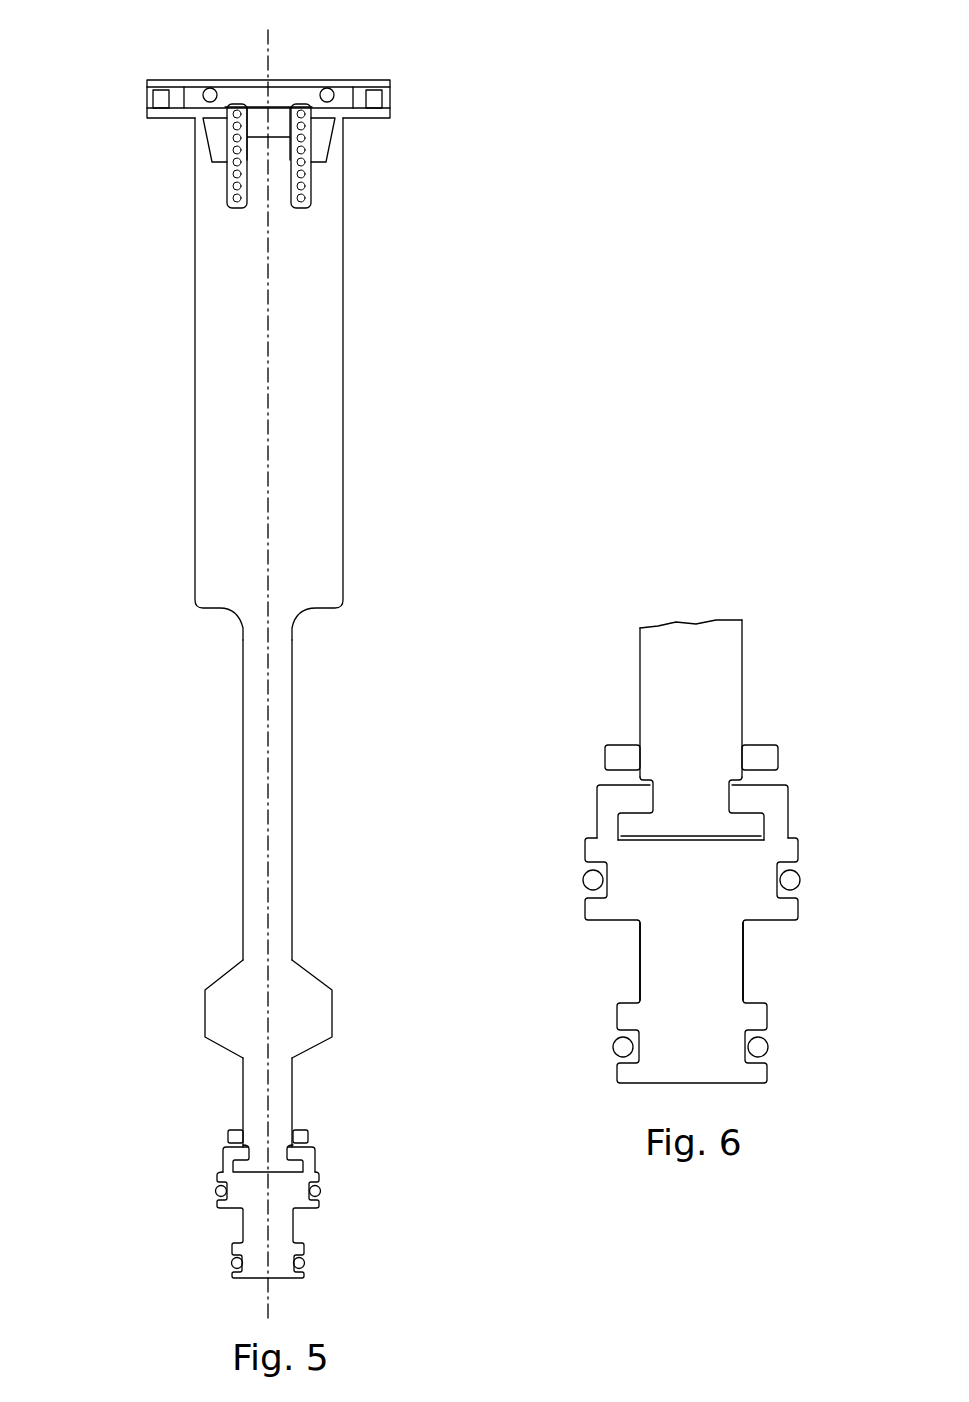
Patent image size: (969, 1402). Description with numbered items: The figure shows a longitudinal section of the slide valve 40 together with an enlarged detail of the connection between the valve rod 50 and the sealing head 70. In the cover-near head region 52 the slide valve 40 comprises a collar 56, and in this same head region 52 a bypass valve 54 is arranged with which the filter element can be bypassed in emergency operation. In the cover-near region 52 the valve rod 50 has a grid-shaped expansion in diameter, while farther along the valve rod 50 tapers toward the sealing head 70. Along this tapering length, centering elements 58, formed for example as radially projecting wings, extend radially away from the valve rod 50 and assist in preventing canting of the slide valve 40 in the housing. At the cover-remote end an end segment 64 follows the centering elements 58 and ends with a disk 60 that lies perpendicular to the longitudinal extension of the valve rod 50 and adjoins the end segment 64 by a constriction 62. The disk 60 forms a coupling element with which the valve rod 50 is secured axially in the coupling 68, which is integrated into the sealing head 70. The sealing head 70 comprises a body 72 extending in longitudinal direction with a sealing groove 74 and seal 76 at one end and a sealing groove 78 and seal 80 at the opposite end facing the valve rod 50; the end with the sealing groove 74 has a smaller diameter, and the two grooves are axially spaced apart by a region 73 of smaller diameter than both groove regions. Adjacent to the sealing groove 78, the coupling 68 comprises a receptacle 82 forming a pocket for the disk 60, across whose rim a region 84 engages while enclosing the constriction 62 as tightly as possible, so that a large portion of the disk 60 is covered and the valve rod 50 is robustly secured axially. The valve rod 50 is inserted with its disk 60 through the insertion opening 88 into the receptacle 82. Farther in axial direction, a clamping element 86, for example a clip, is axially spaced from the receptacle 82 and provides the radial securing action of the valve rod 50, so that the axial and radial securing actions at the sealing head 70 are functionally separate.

In FIG. 5, the slide valve 40 is at (124, 190).
In FIG. 5, the valve rod 50 is at (190, 563).
In FIG. 6, the valve rod 50 is at (747, 650).
In FIG. 5, the cover-near head region 52 is at (343, 310).
In FIG. 5, the bypass valve 54 is at (324, 190).
In FIG. 5, the collar 56 is at (383, 80).
In FIG. 5, the centering elements 58 is at (225, 975).
In FIG. 5, the disk 60 is at (226, 1162).
In FIG. 6, the disk 60 is at (752, 836).
In FIG. 5, the constriction 62 is at (238, 1134).
In FIG. 6, the constriction 62 is at (650, 800).
In FIG. 5, the end segment 64 is at (203, 1076).
In FIG. 6, the end segment 64 is at (691, 698).
In FIG. 5, the coupling 68 is at (314, 1141).
In FIG. 6, the coupling 68 is at (799, 738).
In FIG. 5, the sealing head 70 is at (210, 1198).
In FIG. 6, the sealing head 70 is at (762, 981).
In FIG. 6, the body 72 is at (708, 916).
In FIG. 6, the region 73 is at (640, 965).
In FIG. 6, the sealing groove 74 is at (762, 1076).
In FIG. 6, the seal 76 is at (614, 1046).
In FIG. 6, the sealing groove 78 is at (795, 900).
In FIG. 6, the seal 80 is at (583, 878).
In FIG. 6, the receptacle 82 is at (618, 825).
In FIG. 6, the region 84 is at (765, 783).
In FIG. 6, the clamping element 86 is at (625, 744).
In FIG. 6, the insertion opening 88 is at (765, 818).